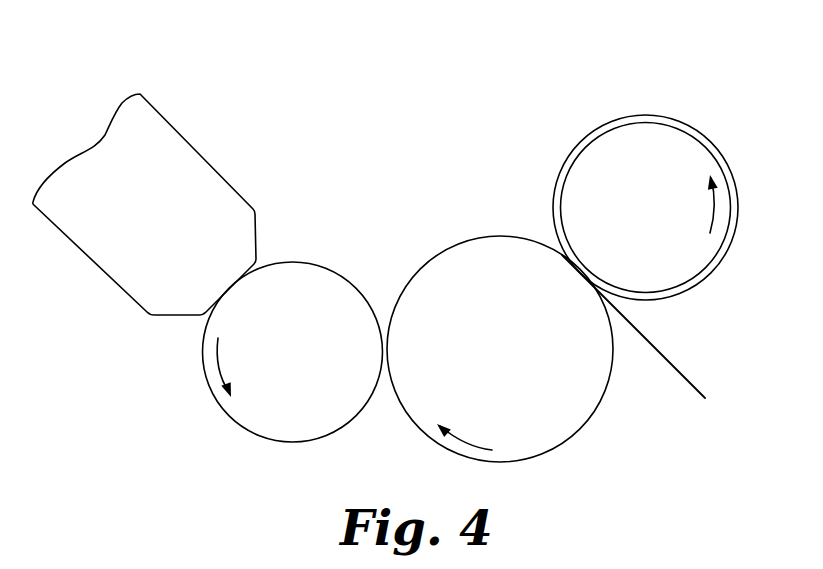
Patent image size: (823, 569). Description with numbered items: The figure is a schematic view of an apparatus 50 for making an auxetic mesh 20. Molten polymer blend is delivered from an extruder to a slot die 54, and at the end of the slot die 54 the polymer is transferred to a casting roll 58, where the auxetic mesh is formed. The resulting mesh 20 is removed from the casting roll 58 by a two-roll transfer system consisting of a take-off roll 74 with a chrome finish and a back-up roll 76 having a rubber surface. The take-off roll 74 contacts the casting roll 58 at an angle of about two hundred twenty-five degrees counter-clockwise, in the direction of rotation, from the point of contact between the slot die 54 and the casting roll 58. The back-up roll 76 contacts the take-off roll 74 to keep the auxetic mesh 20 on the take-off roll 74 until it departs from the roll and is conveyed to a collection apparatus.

The apparatus 50 is at (698, 74).
The slot die 54 is at (144, 204).
The casting roll 58 is at (293, 352).
The take-off roll 74 is at (500, 349).
The back-up roll 76 is at (645, 207).
The auxetic mesh 20 is at (678, 365).